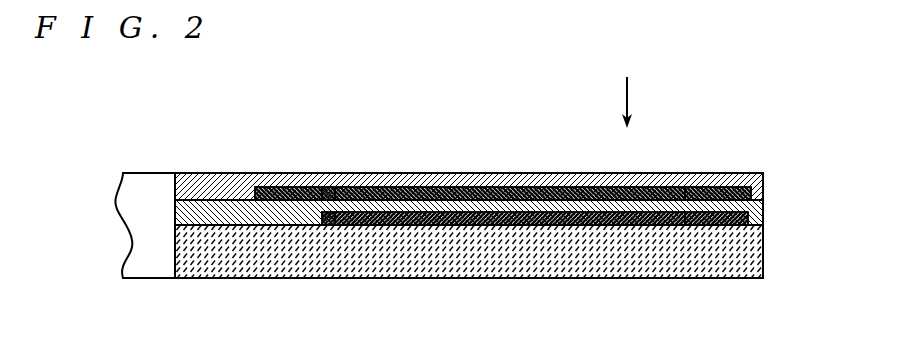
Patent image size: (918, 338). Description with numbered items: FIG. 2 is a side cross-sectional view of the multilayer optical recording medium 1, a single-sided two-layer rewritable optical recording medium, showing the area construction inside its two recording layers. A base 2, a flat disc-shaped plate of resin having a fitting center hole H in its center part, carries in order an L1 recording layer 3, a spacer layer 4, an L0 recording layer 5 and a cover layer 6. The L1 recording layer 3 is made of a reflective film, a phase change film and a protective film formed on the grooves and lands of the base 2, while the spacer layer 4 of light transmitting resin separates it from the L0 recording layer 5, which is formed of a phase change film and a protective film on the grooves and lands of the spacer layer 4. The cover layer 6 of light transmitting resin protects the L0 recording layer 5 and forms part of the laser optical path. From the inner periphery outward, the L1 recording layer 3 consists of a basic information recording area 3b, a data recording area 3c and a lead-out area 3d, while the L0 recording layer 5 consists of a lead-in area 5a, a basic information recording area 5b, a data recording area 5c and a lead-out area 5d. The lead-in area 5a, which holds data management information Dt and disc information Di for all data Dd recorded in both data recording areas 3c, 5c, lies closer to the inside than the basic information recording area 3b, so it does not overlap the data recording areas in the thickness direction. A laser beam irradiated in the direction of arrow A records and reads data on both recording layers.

The multilayer optical recording medium 1 is at (402, 80).
The base 2 is at (737, 260).
The L1 recording layer 3 is at (755, 222).
The basic information recording area 3b is at (330, 224).
The data recording area 3c is at (507, 224).
The lead-out area 3d is at (720, 220).
The spacer layer 4 is at (763, 212).
The L0 recording layer 5 is at (757, 195).
The lead-in area 5a is at (288, 190).
The basic information recording area 5b is at (335, 188).
The data recording area 5c is at (505, 185).
The lead-out area 5d is at (717, 188).
The cover layer 6 is at (763, 174).
The fitting center hole H is at (150, 224).
The arrow A is at (638, 102).